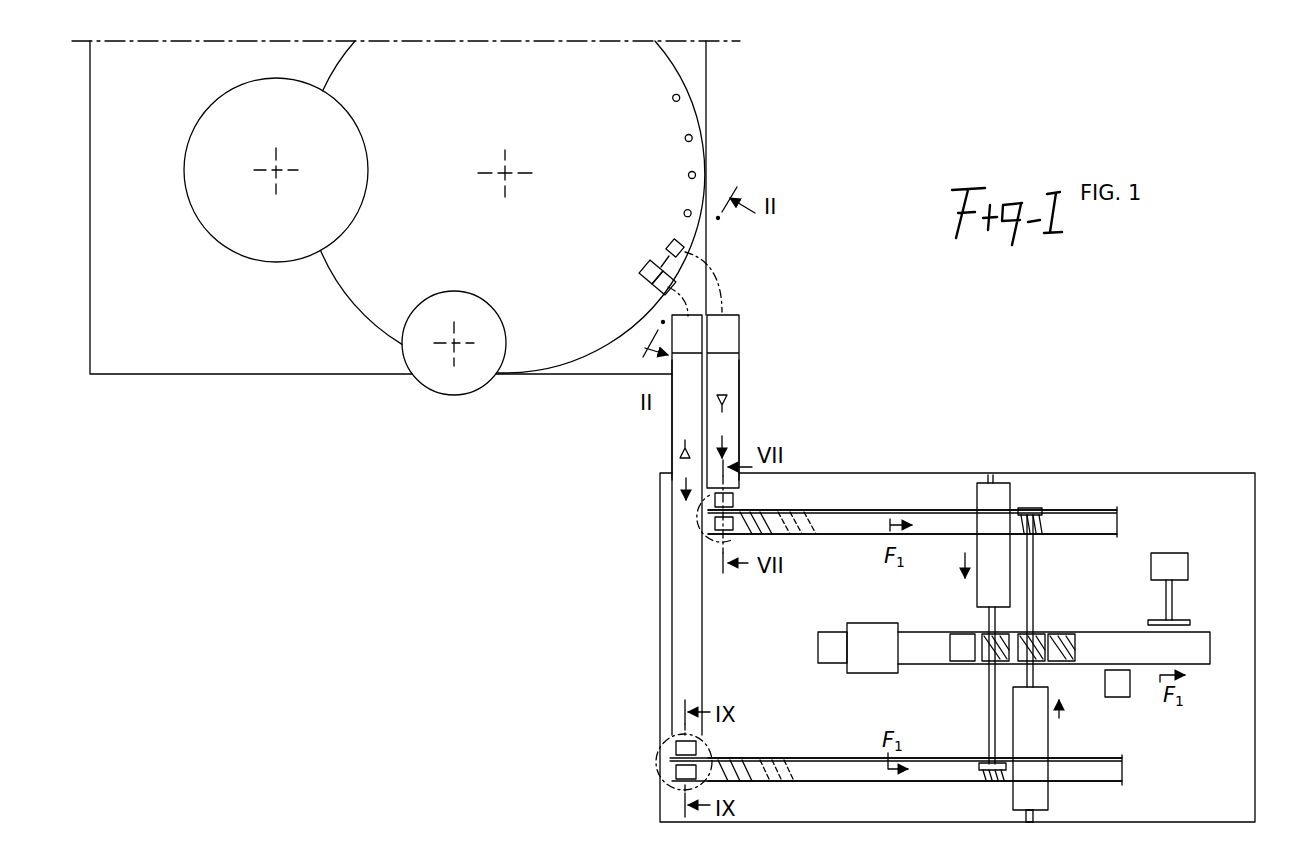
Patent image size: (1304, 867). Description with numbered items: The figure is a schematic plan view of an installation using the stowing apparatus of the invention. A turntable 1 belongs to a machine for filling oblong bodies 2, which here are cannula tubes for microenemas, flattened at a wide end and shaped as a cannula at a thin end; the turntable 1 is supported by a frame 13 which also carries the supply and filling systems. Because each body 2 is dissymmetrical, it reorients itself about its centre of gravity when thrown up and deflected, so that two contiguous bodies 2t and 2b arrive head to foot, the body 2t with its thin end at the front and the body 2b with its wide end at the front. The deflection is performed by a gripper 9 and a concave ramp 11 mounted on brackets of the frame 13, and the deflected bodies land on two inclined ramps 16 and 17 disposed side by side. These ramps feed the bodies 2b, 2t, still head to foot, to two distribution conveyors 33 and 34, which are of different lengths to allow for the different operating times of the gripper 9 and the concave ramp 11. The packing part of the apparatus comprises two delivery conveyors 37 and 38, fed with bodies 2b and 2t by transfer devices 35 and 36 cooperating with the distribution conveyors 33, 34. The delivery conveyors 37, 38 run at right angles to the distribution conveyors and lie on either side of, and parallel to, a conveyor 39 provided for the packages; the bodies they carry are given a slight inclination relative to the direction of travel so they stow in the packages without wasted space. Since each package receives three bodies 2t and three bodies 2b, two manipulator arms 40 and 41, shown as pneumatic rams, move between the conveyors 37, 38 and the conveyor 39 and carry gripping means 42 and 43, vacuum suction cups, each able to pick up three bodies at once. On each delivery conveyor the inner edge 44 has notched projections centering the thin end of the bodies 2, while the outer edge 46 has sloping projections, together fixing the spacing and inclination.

The turntable 1 is at (604, 157).
The oblong bodies 2 is at (688, 172).
The gripper 9 is at (666, 239).
The concave ramp 11 is at (641, 278).
The frame 13 is at (704, 244).
The inclined ramp 16 is at (731, 350).
The inclined ramp 17 is at (695, 350).
The oblong body 2t is at (730, 400).
The oblong body 2b is at (678, 455).
The distribution conveyor 33 is at (735, 419).
The distribution conveyor 34 is at (672, 427).
The transfer device 35 is at (752, 500).
The transfer device 36 is at (670, 786).
The delivery conveyor 37 is at (857, 526).
The delivery conveyor 38 is at (825, 770).
The conveyor 39 is at (912, 640).
The manipulator arm 40 is at (1035, 730).
The manipulator arm 41 is at (985, 583).
The gripping means 42 is at (1044, 522).
The gripping means 43 is at (984, 780).
The inner edge 44 is at (920, 536).
The outer edge 46 is at (927, 512).